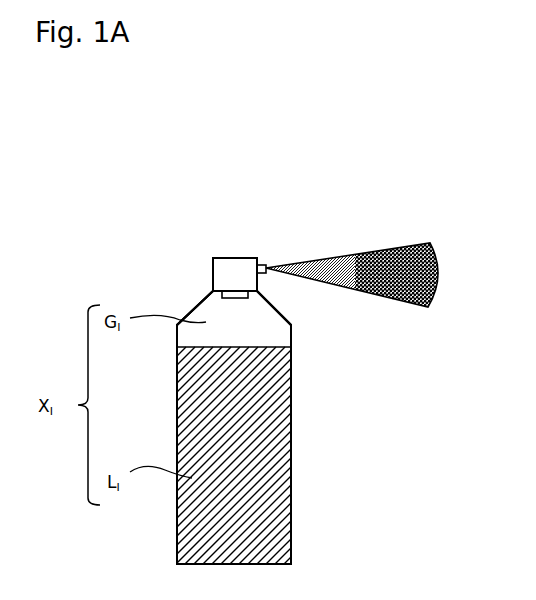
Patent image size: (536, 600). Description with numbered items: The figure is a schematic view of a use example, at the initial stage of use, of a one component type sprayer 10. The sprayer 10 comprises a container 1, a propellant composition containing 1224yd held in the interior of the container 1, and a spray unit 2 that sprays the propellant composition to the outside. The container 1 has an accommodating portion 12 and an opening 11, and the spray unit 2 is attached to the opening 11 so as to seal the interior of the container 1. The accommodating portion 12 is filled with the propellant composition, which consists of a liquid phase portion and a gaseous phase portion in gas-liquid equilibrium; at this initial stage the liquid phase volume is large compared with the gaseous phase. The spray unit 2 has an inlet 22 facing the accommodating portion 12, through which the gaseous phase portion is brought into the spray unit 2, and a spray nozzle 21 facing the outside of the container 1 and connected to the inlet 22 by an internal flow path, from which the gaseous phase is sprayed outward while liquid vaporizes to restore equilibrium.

The sprayer 10 is at (165, 168).
The container 1 is at (305, 410).
The spray unit 2 is at (206, 271).
The opening 11 is at (216, 296).
The accommodating portion 12 is at (292, 458).
The spray nozzle 21 is at (251, 236).
The inlet 22 is at (284, 318).